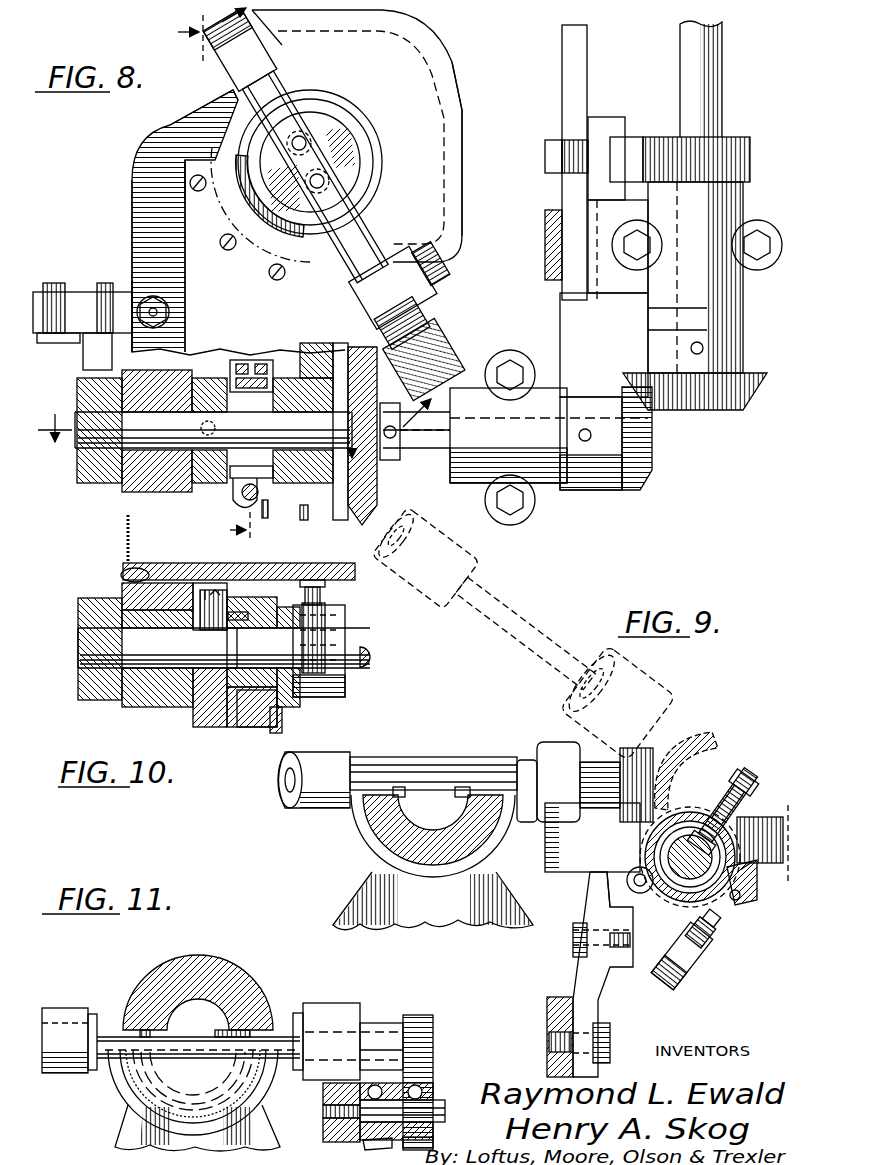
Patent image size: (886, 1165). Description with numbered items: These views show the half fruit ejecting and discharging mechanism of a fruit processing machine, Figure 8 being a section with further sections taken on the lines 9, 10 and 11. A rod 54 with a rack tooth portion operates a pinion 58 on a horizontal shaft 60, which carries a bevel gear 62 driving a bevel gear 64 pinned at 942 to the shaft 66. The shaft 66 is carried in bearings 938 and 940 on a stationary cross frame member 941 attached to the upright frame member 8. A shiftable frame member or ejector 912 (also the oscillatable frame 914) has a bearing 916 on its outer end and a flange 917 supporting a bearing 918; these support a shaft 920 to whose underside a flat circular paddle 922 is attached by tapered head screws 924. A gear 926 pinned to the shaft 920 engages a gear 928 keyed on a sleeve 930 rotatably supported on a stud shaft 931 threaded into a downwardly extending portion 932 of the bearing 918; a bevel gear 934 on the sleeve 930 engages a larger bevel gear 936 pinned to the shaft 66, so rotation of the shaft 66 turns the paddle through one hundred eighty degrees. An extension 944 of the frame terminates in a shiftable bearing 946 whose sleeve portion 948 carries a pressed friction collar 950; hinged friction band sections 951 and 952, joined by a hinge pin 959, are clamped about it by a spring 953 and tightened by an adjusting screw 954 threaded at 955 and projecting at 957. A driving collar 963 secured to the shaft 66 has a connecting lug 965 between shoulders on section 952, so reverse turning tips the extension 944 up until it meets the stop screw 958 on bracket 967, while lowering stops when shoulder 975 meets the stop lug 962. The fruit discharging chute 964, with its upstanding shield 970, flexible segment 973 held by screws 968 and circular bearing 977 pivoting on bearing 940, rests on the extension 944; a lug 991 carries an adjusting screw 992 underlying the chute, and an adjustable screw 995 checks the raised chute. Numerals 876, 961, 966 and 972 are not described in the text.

In FIG. 8, the main upright vertical frame member 8 is at (548, 214).
In FIG. 8, the section line 9— 9 is at (206, 279).
In FIG. 8, the section line 10— 10 is at (194, 424).
In FIG. 8, the section line 11— 11 is at (329, 221).
In FIG. 8, the rod 54 is at (630, 140).
In FIG. 8, the pinion 58 is at (750, 146).
In FIG. 8, the horizontal shaft 60 is at (710, 98).
In FIG. 8, the bevel gear 62 is at (744, 411).
In FIG. 8, the bevel gear 64 is at (637, 478).
In FIG. 8, the shaft 66 is at (78, 452).
In FIG. 10, the shaft 66 is at (85, 648).
In FIG. 9, the shaft 66 is at (688, 856).
In FIG. 9, the housing 876 is at (365, 873).
In FIG. 11, the housing 876 is at (120, 1098).
In FIG. 8, the half fruit ejector 912 is at (437, 78).
In FIG. 8, the oscillatable fruit discharging frame 914 is at (456, 112).
In FIG. 8, the bearing 916 is at (236, 54).
In FIG. 9, the bearing 916 is at (472, 560).
In FIG. 11, the bearing 916 is at (60, 1015).
In FIG. 8, the flange 917 is at (440, 250).
In FIG. 8, the bearing 918 is at (440, 278).
In FIG. 9, the bearing 918 is at (535, 758).
In FIG. 11, the bearing 918 is at (336, 1012).
In FIG. 8, the shaft 920 is at (303, 112).
In FIG. 9, the shaft 920 is at (478, 592).
In FIG. 11, the shaft 920 is at (103, 1043).
In FIG. 8, the flat circular disk or paddle 922 is at (334, 130).
In FIG. 9, the flat circular disk or paddle 922 is at (512, 603).
In FIG. 11, the flat circular disk or paddle 922 is at (205, 1025).
In FIG. 8, the tapered head screws 924 is at (325, 181).
In FIG. 9, the tapered head screws 924 is at (400, 785).
In FIG. 8, the gear 926 is at (428, 356).
In FIG. 9, the gear 926 is at (662, 740).
In FIG. 11, the gear 926 is at (420, 1020).
In FIG. 11, the gear 928 is at (432, 1092).
In FIG. 11, the sleeve 930 is at (325, 1126).
In FIG. 11, the stud shaft 931 is at (420, 1112).
In FIG. 11, the downwardly extending portion 932 is at (325, 1097).
In FIG. 8, the bevel gear 934 is at (428, 314).
In FIG. 11, the bevel gear 934 is at (365, 1144).
In FIG. 8, the bevel gear 936 is at (380, 497).
In FIG. 8, the bearing 938 is at (562, 390).
In FIG. 8, the bearing 940 is at (98, 486).
In FIG. 10, the bearing 940 is at (95, 702).
In FIG. 9, the bearing 940 is at (585, 972).
In FIG. 8, the stationary cross frame member 941 is at (38, 290).
In FIG. 9, the stationary cross frame member 941 is at (547, 1005).
In FIG. 8, the pin 942 is at (585, 442).
In FIG. 8, the extension 944 is at (266, 350).
In FIG. 8, the bearing 946 is at (360, 540).
In FIG. 10, the bearing 946 is at (335, 624).
In FIG. 9, the bearing 946 is at (665, 845).
In FIG. 8, the sleeve portion 948 is at (266, 499).
In FIG. 10, the sleeve portion 948 is at (212, 621).
In FIG. 8, the friction collar 950 is at (240, 498).
In FIG. 10, the friction collar 950 is at (262, 730).
In FIG. 9, the friction collar 950 is at (742, 904).
In FIG. 9, the friction band section 951 is at (652, 842).
In FIG. 10, the friction band section 952 is at (233, 730).
In FIG. 9, the friction band section 952 is at (662, 968).
In FIG. 9, the spring 953 is at (730, 800).
In FIG. 9, the adjusting screw 954 is at (710, 782).
In FIG. 9, the threaded connection 955 is at (745, 832).
In FIG. 9, the projection point 957 is at (742, 815).
In FIG. 9, the stop screw 958 is at (712, 960).
In FIG. 9, the hinge pin 959 is at (573, 938).
In FIG. 8, the pin 961 is at (200, 428).
In FIG. 10, the pin 961 is at (280, 604).
In FIG. 9, the stop lug 962 is at (628, 888).
In FIG. 8, the driving collar 963 is at (210, 382).
In FIG. 10, the driving collar 963 is at (195, 722).
In FIG. 8, the fruit discharging chute 964 is at (148, 180).
In FIG. 10, the connecting lug 965 is at (283, 730).
In FIG. 9, the connecting lug 965 is at (737, 900).
In FIG. 8, the flange 966 is at (185, 172).
In FIG. 9, the bracket 967 is at (698, 975).
In FIG. 8, the screws 968 is at (272, 270).
In FIG. 8, the upstanding shield 970 is at (153, 143).
In FIG. 10, the upstanding shield 970 is at (130, 542).
In FIG. 8, the pin 972 is at (243, 497).
In FIG. 8, the flexible segment 973 is at (245, 127).
In FIG. 9, the shoulder 975 is at (590, 874).
In FIG. 8, the circular bearing 977 is at (130, 493).
In FIG. 10, the circular bearing 977 is at (130, 712).
In FIG. 8, the lug 991 is at (66, 285).
In FIG. 10, the lug 991 is at (347, 645).
In FIG. 9, the lug 991 is at (746, 875).
In FIG. 8, the adjusting screw 992 is at (118, 275).
In FIG. 10, the adjusting screw 992 is at (283, 640).
In FIG. 9, the adjusting screw 992 is at (790, 830).
In FIG. 10, the adjustable screw 995 is at (325, 592).